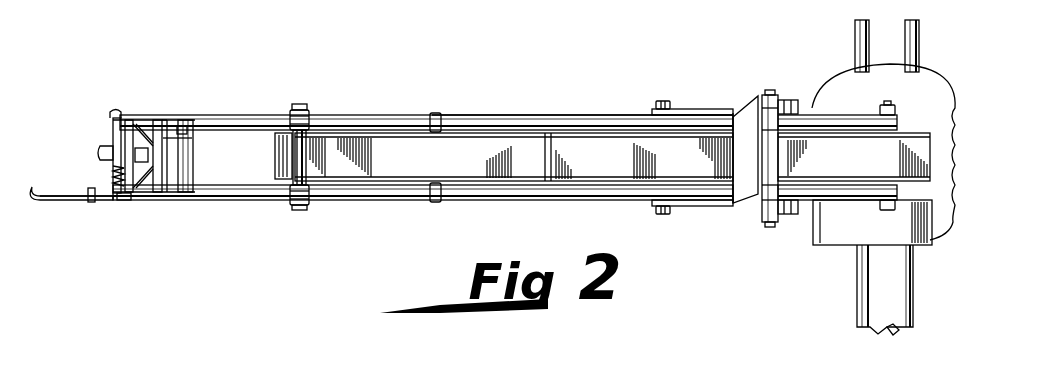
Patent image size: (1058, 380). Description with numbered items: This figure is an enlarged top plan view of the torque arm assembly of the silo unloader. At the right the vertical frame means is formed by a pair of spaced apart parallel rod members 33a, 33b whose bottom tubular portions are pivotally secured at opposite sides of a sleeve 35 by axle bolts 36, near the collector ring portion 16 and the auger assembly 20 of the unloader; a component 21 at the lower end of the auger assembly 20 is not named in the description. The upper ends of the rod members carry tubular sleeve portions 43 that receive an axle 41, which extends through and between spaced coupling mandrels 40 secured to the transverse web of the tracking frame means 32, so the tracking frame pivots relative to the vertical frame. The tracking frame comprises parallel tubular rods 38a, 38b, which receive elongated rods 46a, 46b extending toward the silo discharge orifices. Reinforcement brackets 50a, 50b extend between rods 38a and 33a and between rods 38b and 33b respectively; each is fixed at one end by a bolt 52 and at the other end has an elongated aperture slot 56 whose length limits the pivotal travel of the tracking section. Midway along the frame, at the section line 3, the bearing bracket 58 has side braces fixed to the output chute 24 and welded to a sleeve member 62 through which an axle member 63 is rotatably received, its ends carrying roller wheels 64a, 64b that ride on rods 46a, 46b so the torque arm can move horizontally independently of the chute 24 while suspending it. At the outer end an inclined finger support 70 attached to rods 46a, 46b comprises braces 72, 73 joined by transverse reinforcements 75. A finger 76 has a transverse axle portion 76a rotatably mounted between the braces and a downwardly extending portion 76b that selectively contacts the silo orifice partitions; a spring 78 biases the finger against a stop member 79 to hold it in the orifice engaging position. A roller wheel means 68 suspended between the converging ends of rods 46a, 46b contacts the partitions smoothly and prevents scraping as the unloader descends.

The section line 3- 3 is at (282, 62).
The collector ring portion 16 is at (927, 83).
The auger assembly 20 is at (860, 318).
The mast foot 21 is at (880, 333).
The output chute 24 is at (438, 167).
The tracking frame means 32 is at (471, 96).
The rod member 33a is at (848, 118).
The rod member 33b is at (838, 202).
The sleeve 35 is at (900, 128).
The axle bolt 36 is at (890, 222).
The rod 38a is at (515, 122).
The rod 38b is at (505, 202).
The coupling mandrel 40 is at (772, 98).
The axle 41 is at (790, 162).
The tubular sleeve portion 43 is at (762, 118).
The elongated rod 46a is at (383, 120).
The elongated rod 46b is at (412, 200).
The reinforcement bracket 50a is at (684, 112).
The reinforcement bracket 50b is at (652, 208).
The bolt 52 is at (795, 100).
The elongated aperture slot 56 is at (655, 104).
The bearing bracket 58 is at (312, 166).
The sleeve member 62 is at (290, 154).
The axle member 63 is at (310, 116).
The roller wheel 64a is at (296, 111).
The roller wheel 64b is at (298, 206).
The roller wheel means 68 is at (100, 154).
The inclined finger support 70 is at (129, 163).
The brace 72 is at (178, 194).
The brace 73 is at (150, 119).
The transverse reinforcement 75 is at (182, 139).
The finger 76 is at (66, 210).
The transverse axle portion 76a is at (118, 130).
The downwardly extending portion 76b is at (100, 202).
The spring 78 is at (113, 173).
The stop member 79 is at (131, 197).